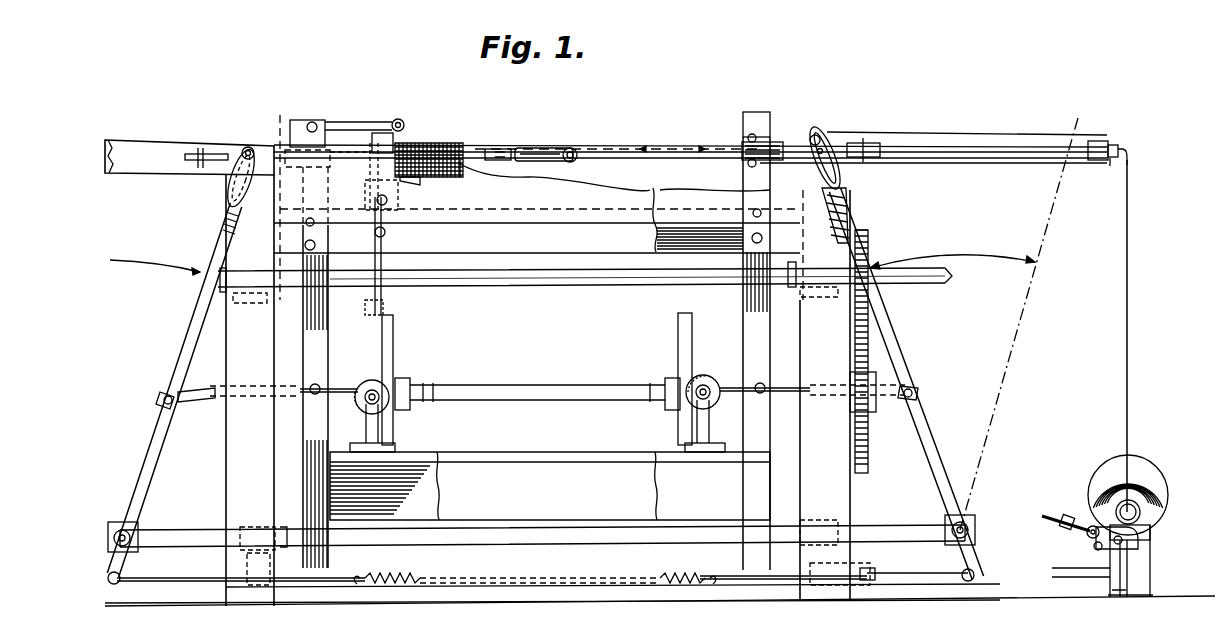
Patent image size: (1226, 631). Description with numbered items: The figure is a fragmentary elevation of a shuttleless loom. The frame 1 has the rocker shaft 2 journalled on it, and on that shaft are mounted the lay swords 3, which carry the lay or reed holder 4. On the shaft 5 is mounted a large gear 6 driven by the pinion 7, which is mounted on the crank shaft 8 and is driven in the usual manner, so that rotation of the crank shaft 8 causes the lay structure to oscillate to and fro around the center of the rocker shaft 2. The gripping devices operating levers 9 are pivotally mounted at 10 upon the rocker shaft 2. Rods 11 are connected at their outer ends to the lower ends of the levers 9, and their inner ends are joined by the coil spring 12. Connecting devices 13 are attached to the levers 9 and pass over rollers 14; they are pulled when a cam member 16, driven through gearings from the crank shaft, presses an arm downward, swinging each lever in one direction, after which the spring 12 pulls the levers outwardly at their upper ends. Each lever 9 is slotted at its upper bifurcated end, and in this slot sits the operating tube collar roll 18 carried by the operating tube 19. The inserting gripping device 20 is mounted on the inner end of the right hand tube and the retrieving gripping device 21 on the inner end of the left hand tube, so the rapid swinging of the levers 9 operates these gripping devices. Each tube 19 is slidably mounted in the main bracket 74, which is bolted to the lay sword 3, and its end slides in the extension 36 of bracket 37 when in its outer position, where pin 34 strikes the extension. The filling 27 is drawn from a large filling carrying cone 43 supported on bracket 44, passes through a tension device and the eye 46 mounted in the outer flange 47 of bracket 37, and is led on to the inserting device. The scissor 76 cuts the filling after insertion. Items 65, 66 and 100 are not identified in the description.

The frame 1 is at (226, 440).
The rocker shaft 2 is at (496, 528).
The lay swords 3 is at (768, 122).
The lay and/or reed holder 4 is at (505, 276).
The shaft 5 is at (512, 388).
The large gear 6 is at (868, 440).
The pinion 7 is at (868, 234).
The crank shaft 8 is at (946, 284).
The gripping devices operating levers 9 is at (173, 349).
The pivot 10 is at (138, 526).
The rods 11 is at (317, 590).
The coil spring 12 is at (672, 590).
The connecting devices 13 is at (252, 400).
The rollers 14 is at (390, 385).
The cam member 16 is at (393, 336).
The operating tube collar roll 18 is at (243, 145).
The operating tube 19 is at (470, 150).
The inserting gripping device 20 is at (563, 148).
The retrieving gripping device 21 is at (505, 148).
The filling 27 is at (1018, 146).
The pin 34 is at (867, 142).
The extension 36 is at (1096, 141).
The bracket 37 is at (1112, 143).
The filling carrying cone 43 is at (1146, 460).
The bracket 44 is at (1150, 576).
The eye 46 is at (1125, 143).
The outer flange 47 is at (1112, 162).
The crank 65 is at (1060, 522).
The handle 66 is at (1066, 514).
The bracket 74 is at (738, 135).
The scissor 76 is at (372, 172).
The net 100 is at (427, 152).